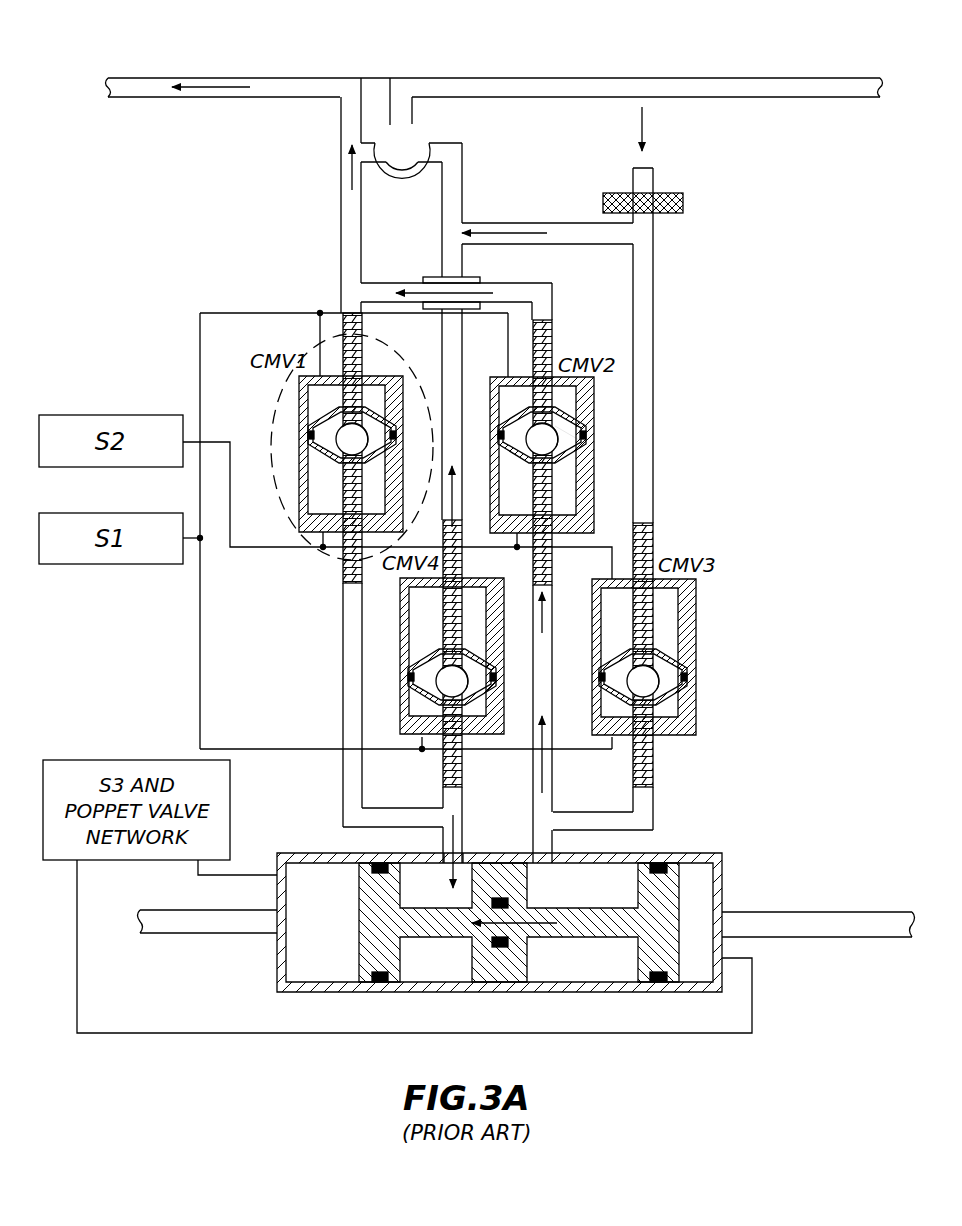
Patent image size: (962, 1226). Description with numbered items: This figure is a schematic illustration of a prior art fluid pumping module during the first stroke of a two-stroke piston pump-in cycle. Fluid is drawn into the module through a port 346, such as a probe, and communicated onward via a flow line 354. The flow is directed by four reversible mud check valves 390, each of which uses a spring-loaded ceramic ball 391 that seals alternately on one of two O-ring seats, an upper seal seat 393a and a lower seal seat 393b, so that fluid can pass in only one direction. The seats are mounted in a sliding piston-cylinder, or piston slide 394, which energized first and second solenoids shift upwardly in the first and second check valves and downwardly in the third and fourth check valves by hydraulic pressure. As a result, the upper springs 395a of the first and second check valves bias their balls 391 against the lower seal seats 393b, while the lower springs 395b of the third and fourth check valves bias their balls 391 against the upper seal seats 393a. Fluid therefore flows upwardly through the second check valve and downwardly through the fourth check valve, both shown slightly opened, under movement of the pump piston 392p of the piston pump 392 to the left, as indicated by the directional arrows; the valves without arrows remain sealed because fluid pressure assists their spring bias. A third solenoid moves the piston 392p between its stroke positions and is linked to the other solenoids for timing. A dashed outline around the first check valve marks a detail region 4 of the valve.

The flow line 354 is at (188, 77).
The port 346 is at (653, 182).
The reversible mud check valve 390 is at (616, 508).
The spring-loaded ceramic ball 391 is at (545, 437).
The upper seal seat 393a is at (648, 389).
The lower seal seat 393b is at (520, 455).
The piston slide 394 is at (570, 443).
The upper spring 395a is at (364, 347).
The lower spring 395b is at (348, 563).
The detail region of FIG. 4 is at (292, 519).
The piston pump 392 is at (732, 1006).
The pump piston 392p is at (682, 892).